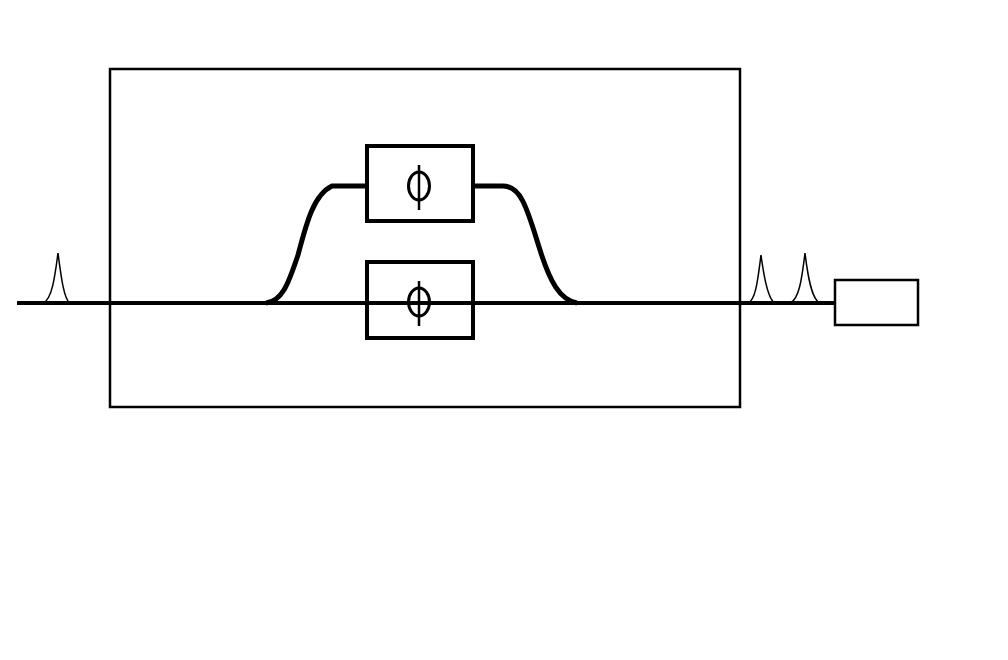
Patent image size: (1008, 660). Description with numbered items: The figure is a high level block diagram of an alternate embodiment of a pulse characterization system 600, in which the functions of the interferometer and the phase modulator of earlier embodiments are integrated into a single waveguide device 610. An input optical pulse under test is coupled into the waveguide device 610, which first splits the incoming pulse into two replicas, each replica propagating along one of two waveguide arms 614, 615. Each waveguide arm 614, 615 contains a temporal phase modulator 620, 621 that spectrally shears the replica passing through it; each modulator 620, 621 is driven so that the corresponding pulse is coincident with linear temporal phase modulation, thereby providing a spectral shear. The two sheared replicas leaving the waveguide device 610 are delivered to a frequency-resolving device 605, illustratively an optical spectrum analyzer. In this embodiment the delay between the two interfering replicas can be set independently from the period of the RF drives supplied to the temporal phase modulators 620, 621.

The pulse characterization system 600 is at (766, 488).
The waveguide device 610 is at (611, 69).
The waveguide arm 614 is at (298, 232).
The waveguide arm 615 is at (313, 308).
The temporal phase modulator 620 is at (440, 146).
The temporal phase modulator 621 is at (445, 338).
The frequency-resolving device 605 is at (857, 325).